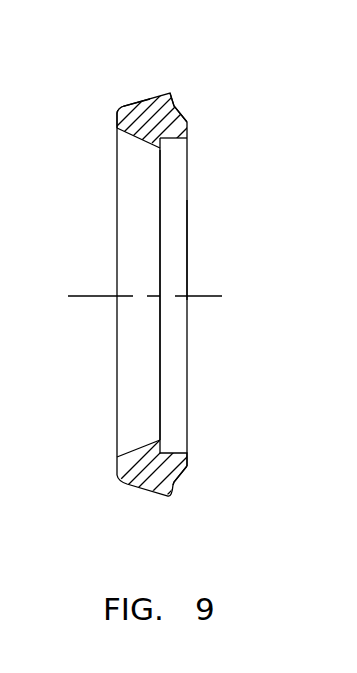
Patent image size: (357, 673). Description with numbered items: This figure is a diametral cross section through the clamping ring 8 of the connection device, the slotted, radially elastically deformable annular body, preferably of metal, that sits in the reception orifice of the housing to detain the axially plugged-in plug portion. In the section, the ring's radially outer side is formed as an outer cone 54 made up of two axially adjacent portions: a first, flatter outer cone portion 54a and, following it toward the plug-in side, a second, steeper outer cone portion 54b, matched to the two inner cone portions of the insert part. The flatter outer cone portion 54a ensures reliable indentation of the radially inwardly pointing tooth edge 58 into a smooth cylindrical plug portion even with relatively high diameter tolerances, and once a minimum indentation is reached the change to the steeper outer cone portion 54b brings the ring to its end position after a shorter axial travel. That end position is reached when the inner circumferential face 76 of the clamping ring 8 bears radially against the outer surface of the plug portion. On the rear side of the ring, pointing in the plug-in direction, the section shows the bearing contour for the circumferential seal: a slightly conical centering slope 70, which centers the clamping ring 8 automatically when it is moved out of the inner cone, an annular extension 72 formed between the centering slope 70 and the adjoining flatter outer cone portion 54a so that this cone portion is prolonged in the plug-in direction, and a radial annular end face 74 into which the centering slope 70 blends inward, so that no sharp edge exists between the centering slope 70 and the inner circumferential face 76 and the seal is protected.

The clamping ring 8 is at (234, 247).
The outer cone 54 is at (128, 496).
The first outer cone portion 54a is at (153, 93).
The second outer cone portion 54b is at (122, 110).
The tooth edge 58 is at (160, 420).
The centering slope 70 is at (181, 478).
The annular extension 72 is at (173, 98).
The radial annular end face 74 is at (187, 461).
The inner circumferential face 76 is at (175, 140).